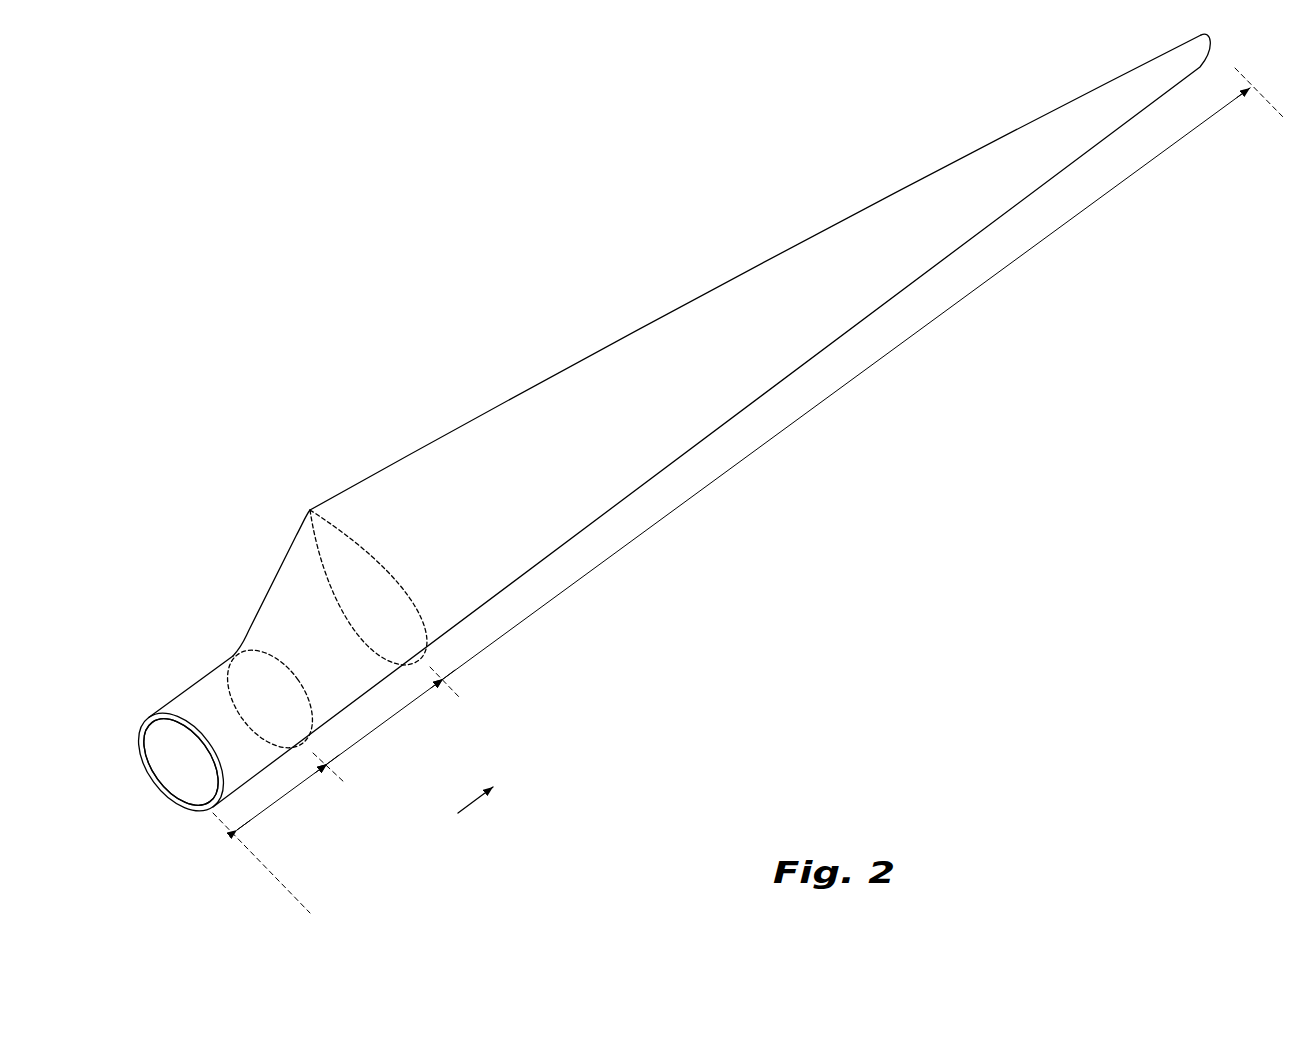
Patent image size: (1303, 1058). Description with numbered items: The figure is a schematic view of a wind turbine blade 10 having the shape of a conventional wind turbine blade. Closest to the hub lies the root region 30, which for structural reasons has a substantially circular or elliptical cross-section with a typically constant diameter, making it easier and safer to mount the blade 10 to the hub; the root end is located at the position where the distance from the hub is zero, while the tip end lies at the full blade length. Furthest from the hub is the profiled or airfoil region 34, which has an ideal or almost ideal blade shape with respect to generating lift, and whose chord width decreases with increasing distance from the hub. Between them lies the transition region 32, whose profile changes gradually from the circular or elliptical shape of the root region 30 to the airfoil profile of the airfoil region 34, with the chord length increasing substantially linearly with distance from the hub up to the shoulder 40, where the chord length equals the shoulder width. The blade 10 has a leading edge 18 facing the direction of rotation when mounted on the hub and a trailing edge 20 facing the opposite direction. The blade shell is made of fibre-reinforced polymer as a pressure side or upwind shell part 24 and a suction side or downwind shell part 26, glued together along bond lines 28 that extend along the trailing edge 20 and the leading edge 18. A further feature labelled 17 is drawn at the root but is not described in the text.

The wind turbine blade 10 is at (488, 282).
The root opening 17 is at (170, 745).
The leading edge 18 is at (887, 308).
The trailing edge 20 is at (743, 277).
The pressure side or upwind shell part 24 is at (178, 704).
The suction side or downwind shell part 26 is at (182, 808).
The bond lines 28 is at (172, 712).
The root region 30 is at (280, 797).
The transition region 32 is at (390, 720).
The airfoil region 34 is at (768, 441).
The shoulder 40 is at (310, 510).